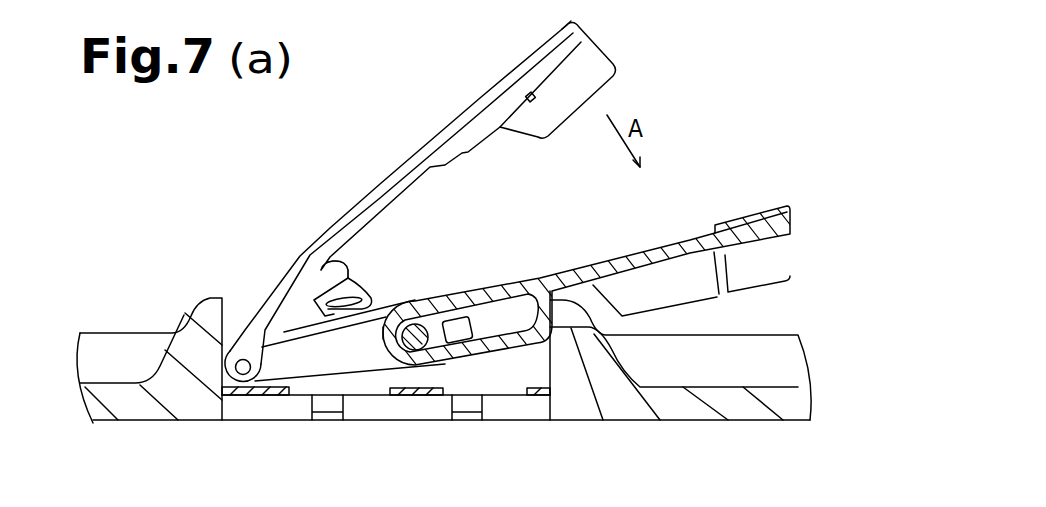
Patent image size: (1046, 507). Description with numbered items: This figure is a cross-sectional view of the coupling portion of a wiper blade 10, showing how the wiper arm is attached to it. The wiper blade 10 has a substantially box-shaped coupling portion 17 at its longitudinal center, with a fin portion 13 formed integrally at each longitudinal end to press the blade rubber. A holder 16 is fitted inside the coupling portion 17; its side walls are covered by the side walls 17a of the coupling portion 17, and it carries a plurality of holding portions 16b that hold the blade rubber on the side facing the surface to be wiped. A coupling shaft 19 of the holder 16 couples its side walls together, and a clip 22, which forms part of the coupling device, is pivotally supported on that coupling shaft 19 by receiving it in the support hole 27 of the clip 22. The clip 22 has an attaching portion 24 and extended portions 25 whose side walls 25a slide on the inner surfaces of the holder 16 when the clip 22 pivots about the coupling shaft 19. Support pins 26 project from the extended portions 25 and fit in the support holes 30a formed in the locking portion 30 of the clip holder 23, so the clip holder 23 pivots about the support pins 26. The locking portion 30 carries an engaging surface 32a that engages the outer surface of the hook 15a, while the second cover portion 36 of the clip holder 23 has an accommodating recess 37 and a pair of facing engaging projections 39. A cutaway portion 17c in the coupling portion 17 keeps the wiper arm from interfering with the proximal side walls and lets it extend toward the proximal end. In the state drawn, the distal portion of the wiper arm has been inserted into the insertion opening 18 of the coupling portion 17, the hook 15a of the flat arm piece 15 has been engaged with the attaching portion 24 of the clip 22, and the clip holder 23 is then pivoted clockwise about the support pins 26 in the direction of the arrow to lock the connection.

The wiper blade 10 is at (208, 423).
The fin portion 13 is at (142, 343).
The arm piece 15 is at (647, 257).
The hook 15a is at (387, 335).
The holder 16 is at (515, 390).
The holding portion 16b is at (337, 420).
The coupling portion 17 is at (363, 413).
The side wall 17a is at (418, 413).
The cutaway portion 17c is at (597, 328).
The insertion opening 18 is at (376, 296).
The coupling shaft 19 is at (461, 331).
The clip 22 is at (442, 364).
The clip holder 23 is at (333, 222).
The attaching portion 24 is at (460, 290).
The extended portion 25 is at (268, 382).
The side wall 25a is at (318, 395).
The support pin 26 is at (235, 382).
The support hole 27 is at (398, 349).
The locking portion 30 is at (280, 322).
The support hole 30a is at (250, 320).
The engaging surface 32a is at (347, 271).
The second cover portion 36 is at (568, 107).
The accommodating recess 37 is at (568, 43).
The engaging projection 39 is at (532, 102).